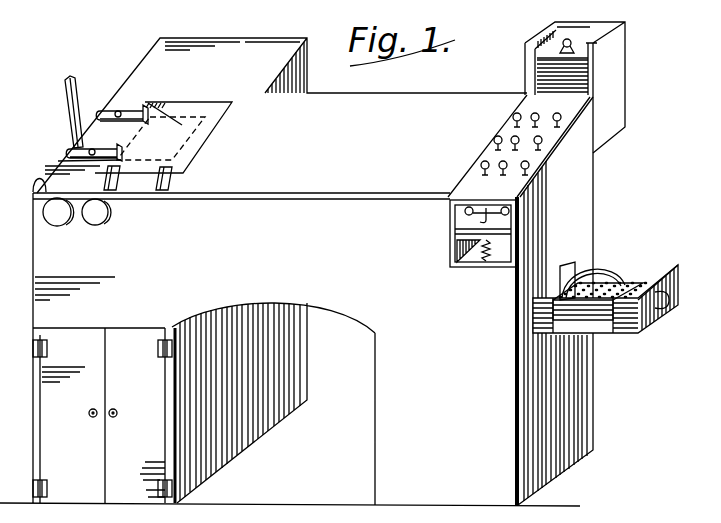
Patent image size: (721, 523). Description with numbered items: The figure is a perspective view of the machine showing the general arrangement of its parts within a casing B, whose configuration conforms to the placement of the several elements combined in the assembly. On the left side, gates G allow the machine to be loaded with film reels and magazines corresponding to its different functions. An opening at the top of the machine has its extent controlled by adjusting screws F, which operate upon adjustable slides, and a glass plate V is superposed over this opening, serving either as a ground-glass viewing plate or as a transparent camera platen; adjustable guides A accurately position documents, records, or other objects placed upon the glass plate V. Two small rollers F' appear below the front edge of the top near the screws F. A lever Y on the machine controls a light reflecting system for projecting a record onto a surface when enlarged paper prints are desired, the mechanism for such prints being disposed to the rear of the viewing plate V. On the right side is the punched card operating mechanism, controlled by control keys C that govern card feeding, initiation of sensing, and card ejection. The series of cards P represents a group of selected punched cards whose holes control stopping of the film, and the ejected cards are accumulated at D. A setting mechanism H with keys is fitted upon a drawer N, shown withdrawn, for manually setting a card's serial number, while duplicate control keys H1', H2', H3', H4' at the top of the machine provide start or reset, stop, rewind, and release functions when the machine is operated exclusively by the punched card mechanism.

The casing B is at (296, 272).
The gates G is at (102, 415).
The adjusting screws F is at (77, 169).
The lever Y is at (65, 98).
The glass plate V is at (212, 132).
The adjustable guides A is at (120, 121).
The rollers F' is at (77, 230).
The card accumulating location D is at (457, 240).
The control keys C is at (531, 122).
The start or reset key H1' is at (559, 149).
The stop key H2' is at (548, 174).
The rewind key H3' is at (498, 179).
The release key H4' is at (461, 164).
The series of cards P is at (593, 82).
The setting mechanism H is at (625, 283).
The drawer N is at (667, 312).